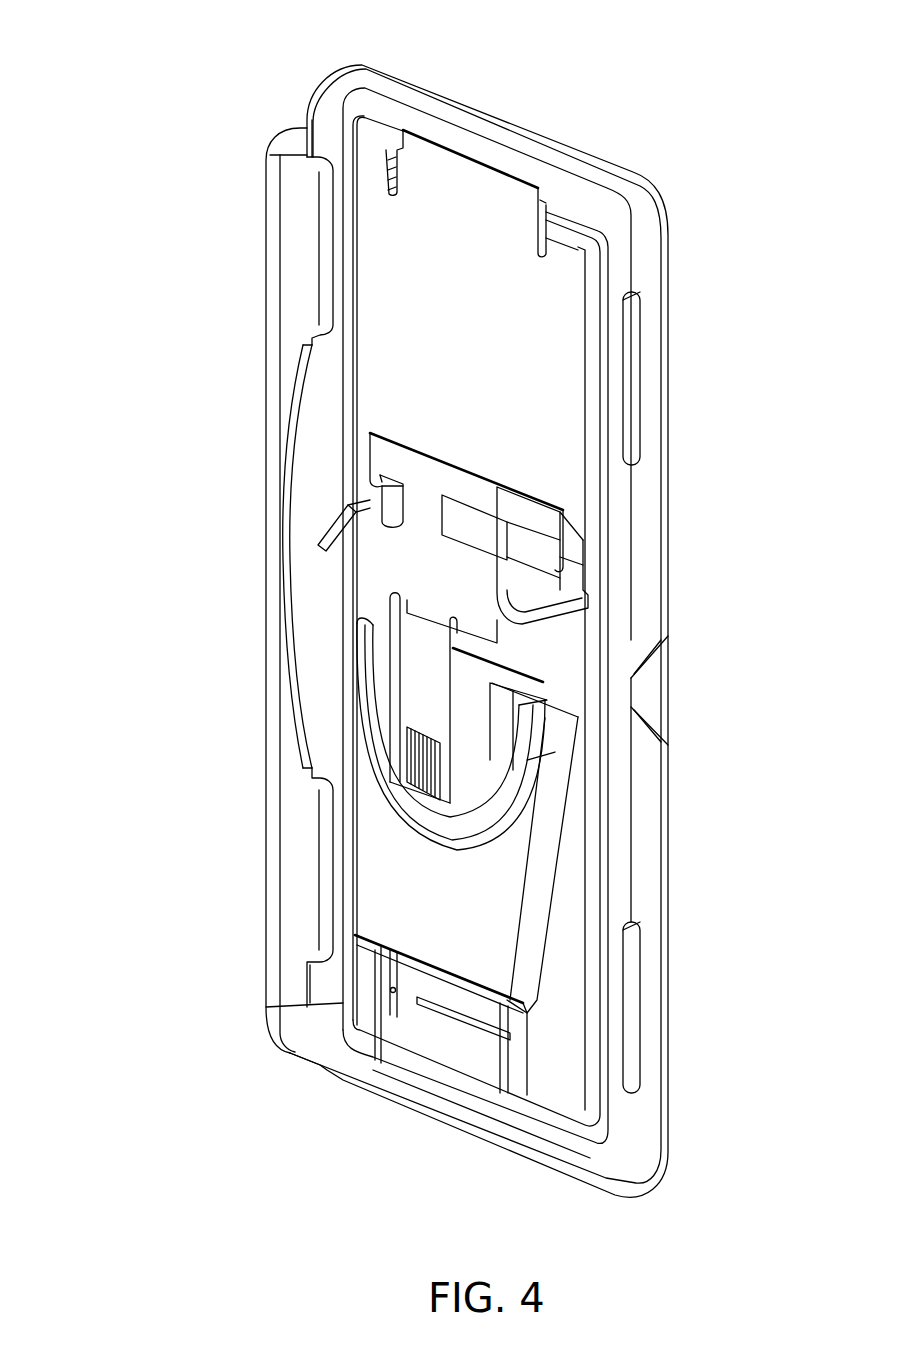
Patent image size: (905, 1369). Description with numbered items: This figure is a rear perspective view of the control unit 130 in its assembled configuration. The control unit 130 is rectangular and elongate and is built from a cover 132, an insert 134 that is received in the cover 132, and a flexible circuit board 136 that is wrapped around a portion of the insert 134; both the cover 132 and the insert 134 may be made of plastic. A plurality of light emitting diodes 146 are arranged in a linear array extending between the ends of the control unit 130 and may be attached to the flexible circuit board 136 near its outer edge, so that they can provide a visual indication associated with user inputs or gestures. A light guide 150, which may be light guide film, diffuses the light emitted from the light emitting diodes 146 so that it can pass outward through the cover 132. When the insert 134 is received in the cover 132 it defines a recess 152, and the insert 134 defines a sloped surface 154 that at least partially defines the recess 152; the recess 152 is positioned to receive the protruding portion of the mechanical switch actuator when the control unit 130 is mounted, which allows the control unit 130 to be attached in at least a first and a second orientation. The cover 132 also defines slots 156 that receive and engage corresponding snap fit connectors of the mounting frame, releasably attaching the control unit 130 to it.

The control unit 130 is at (108, 92).
The cover 132 is at (670, 300).
The insert 134 is at (420, 887).
The flexible circuit board 136 is at (440, 277).
The light emitting diodes 146 is at (505, 1052).
The light guide 150 is at (437, 1037).
The recess 152 is at (467, 773).
The sloped surface 154 is at (477, 918).
The slots 156 is at (327, 192).